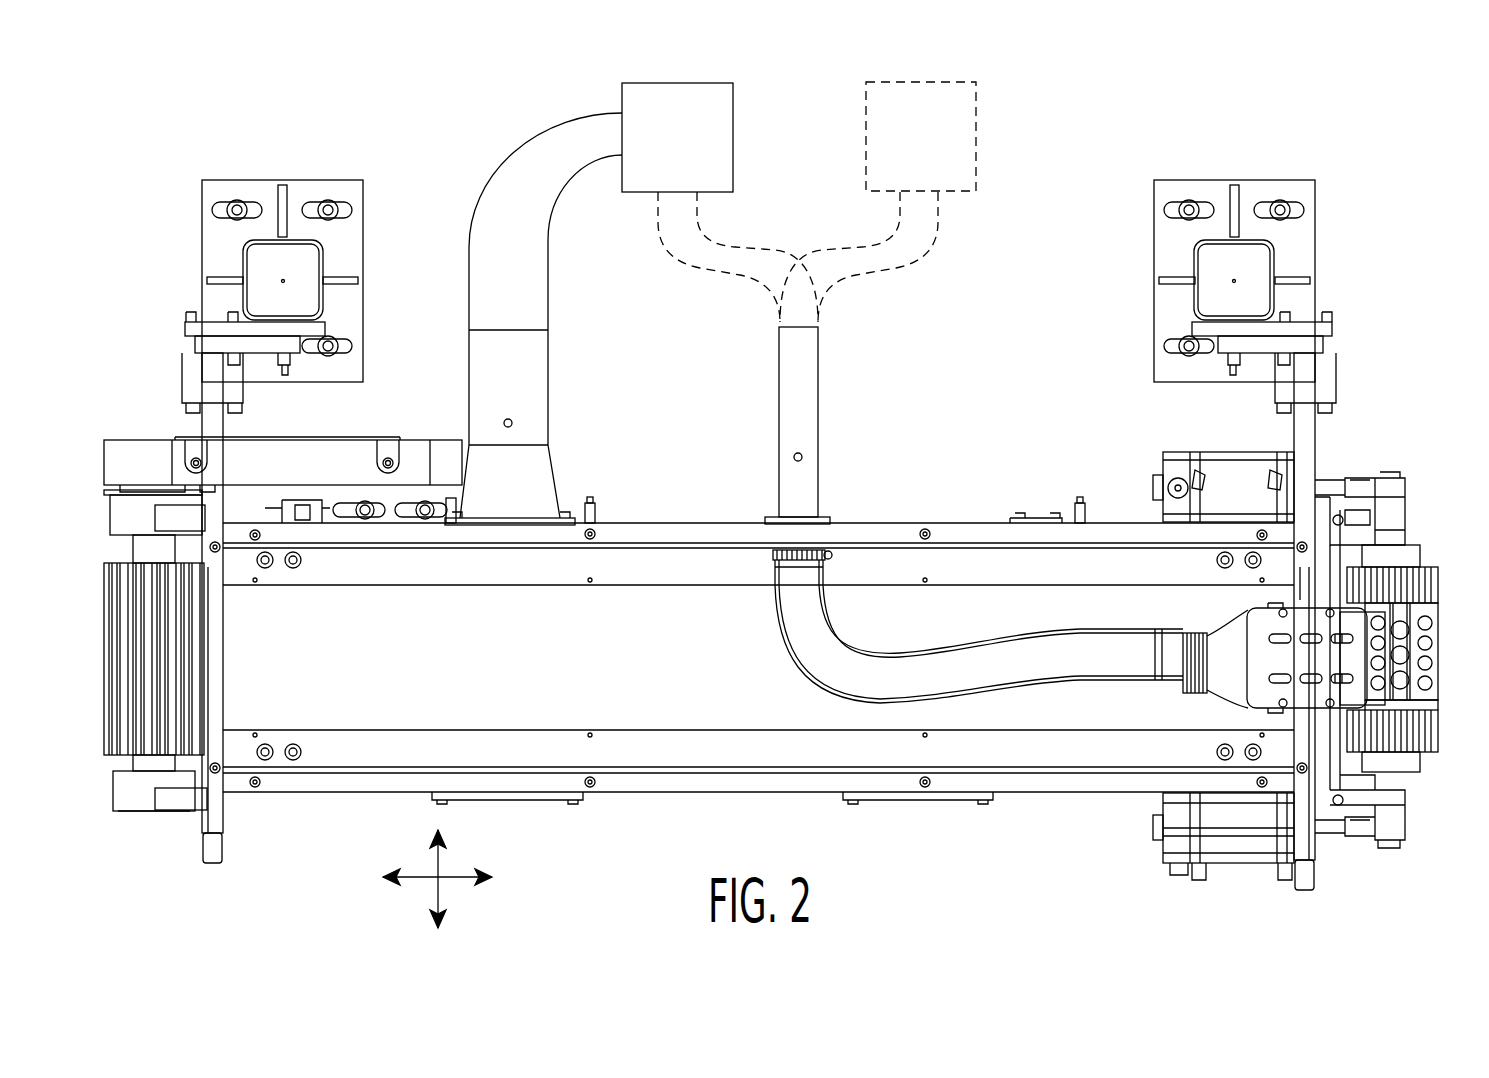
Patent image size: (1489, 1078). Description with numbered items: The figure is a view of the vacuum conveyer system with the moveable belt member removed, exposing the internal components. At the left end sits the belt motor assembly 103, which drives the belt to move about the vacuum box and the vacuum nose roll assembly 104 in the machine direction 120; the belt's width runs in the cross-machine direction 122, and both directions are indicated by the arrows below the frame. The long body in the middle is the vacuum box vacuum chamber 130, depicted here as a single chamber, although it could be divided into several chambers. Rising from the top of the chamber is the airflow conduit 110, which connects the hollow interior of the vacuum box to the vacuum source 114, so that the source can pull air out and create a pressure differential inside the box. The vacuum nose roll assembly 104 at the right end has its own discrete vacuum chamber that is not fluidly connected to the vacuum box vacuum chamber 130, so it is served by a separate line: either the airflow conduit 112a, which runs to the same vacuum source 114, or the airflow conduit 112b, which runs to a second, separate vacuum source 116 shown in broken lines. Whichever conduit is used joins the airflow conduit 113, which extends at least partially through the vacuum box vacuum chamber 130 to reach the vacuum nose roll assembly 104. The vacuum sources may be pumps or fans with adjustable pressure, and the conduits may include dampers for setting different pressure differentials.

The belt motor assembly 103 is at (258, 462).
The vacuum nose roll assembly 104 is at (1422, 364).
The airflow conduit 110 is at (532, 387).
The airflow conduit 112a is at (707, 262).
The airflow conduit 112b is at (887, 265).
The airflow conduit 113 is at (962, 665).
The vacuum source 114 is at (622, 98).
The vacuum source 116 is at (976, 103).
The machine direction 120 is at (457, 875).
The cross-machine direction 122 is at (437, 862).
The vacuum box vacuum chamber 130 is at (521, 662).